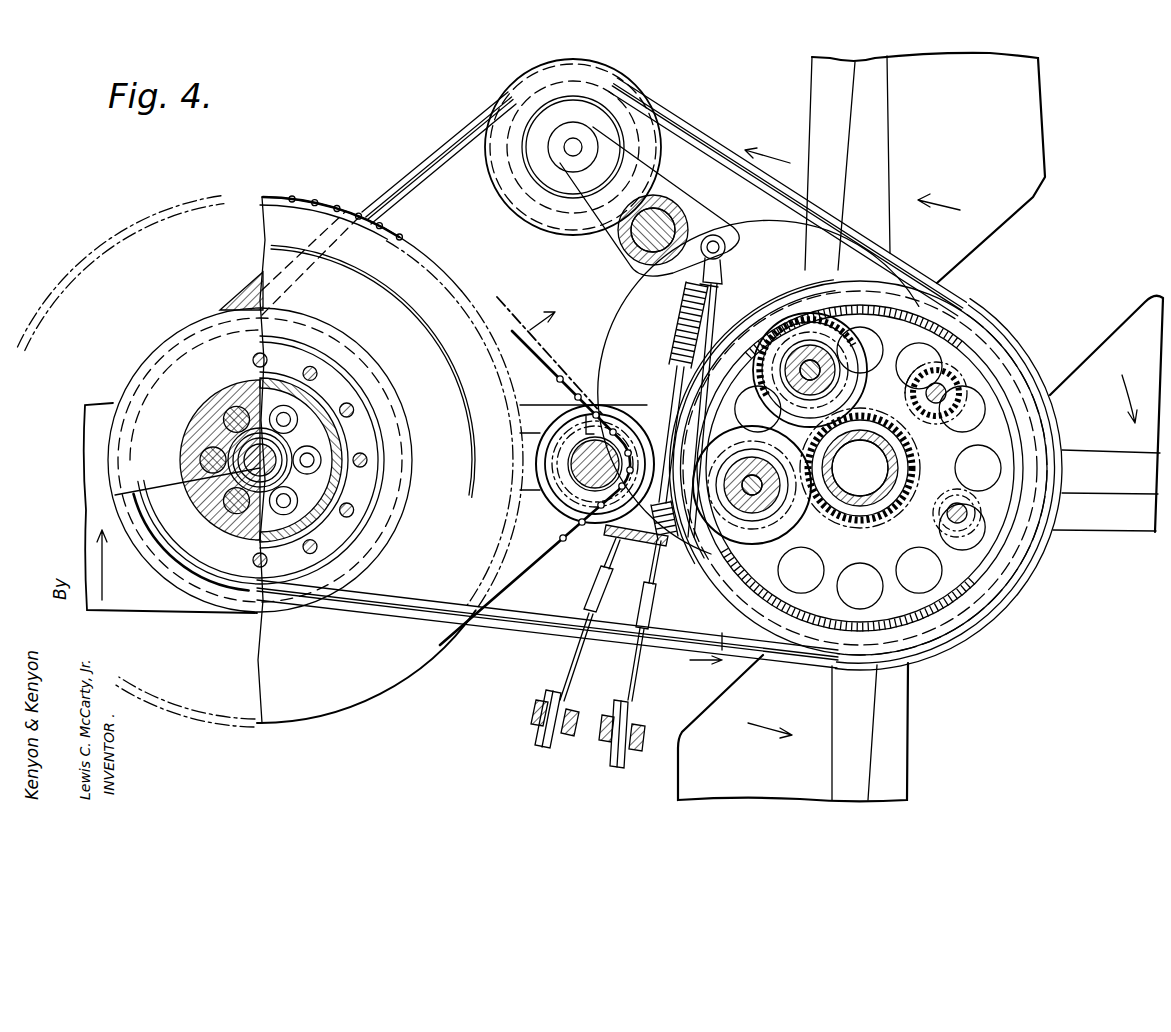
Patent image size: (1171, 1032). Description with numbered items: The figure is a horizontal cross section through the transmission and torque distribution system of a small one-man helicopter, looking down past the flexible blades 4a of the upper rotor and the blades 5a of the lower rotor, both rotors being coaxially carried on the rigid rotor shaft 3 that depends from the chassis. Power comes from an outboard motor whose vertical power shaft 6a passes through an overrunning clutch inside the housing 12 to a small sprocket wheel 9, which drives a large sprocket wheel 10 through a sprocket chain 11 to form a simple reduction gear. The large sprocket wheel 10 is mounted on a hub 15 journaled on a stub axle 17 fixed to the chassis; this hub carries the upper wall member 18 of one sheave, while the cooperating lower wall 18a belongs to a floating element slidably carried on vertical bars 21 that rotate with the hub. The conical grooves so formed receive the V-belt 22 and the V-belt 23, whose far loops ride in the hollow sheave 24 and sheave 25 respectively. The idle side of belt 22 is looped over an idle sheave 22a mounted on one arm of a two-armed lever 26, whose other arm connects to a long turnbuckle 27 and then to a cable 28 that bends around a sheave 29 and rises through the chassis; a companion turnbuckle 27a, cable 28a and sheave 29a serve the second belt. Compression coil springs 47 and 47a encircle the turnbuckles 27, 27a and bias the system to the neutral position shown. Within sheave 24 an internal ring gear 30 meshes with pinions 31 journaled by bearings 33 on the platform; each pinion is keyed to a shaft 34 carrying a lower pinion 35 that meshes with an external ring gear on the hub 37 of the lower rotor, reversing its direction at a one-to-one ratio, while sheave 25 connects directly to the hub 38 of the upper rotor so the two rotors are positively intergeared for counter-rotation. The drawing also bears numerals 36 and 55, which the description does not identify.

The rotor shaft 3 is at (858, 452).
The blades 4a is at (1035, 155).
The blades 5a is at (1124, 522).
The vertical power shaft 6a is at (575, 500).
The sprocket wheel 9 is at (592, 414).
The sprocket wheel 10 is at (416, 282).
The sprocket chain 11 is at (550, 356).
The housing 12 is at (568, 414).
The hub 15 is at (208, 425).
The stub axle 17 is at (270, 452).
The upper wall member 18 is at (152, 428).
The lower wall 18a is at (197, 595).
The vertical bars 21 is at (238, 408).
The V-belt 22 is at (428, 168).
The idle sheave 22a is at (510, 205).
The V-belt 23 is at (780, 648).
The sheave 24 is at (790, 296).
The sheave 25 is at (935, 640).
The two-armed lever 26 is at (615, 243).
The turnbuckle 27 is at (652, 548).
The turnbuckle 27a is at (602, 560).
The cable 28 is at (636, 672).
The cable 28a is at (574, 662).
The sheave 29 is at (622, 758).
The sheave 29a is at (542, 736).
The internal ring gear 30 is at (775, 300).
The pinions 31 is at (720, 308).
The bearings 33 is at (840, 335).
The shaft 34 is at (816, 340).
The pinion 35 is at (950, 383).
The opening 36 is at (906, 392).
The hub 37 is at (892, 440).
The hub 38 is at (950, 618).
The compression coil spring 47 is at (685, 332).
The compression coil spring 47a is at (680, 352).
The spring 55 is at (703, 330).